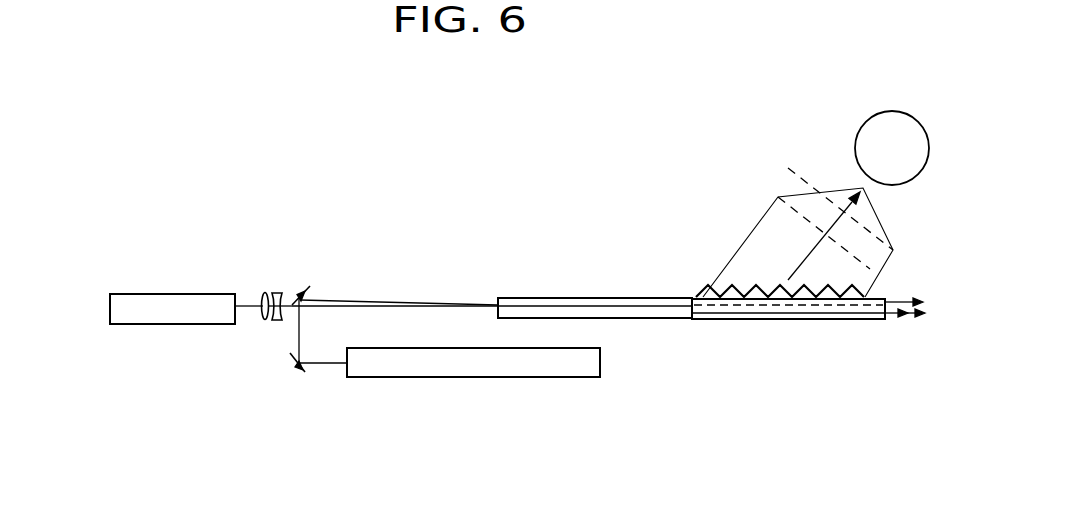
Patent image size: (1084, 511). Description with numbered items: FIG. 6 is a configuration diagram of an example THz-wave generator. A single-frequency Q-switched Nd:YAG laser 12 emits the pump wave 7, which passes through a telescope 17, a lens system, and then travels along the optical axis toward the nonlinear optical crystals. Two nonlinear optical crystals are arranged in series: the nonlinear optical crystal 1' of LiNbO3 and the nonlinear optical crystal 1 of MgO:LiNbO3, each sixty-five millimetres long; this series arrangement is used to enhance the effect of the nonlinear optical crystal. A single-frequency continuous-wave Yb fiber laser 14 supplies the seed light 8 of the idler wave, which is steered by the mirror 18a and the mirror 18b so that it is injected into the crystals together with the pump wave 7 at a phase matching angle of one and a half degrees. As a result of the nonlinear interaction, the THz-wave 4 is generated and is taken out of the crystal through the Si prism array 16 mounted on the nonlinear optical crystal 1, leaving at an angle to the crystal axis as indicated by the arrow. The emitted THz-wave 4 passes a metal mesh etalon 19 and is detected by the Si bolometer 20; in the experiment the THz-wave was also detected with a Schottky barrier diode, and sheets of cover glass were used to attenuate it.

The nonlinear optical crystal 1 is at (808, 344).
The nonlinear optical crystal 1' is at (595, 274).
The THz-wave 4 is at (805, 257).
The pump wave 7 is at (253, 307).
The seed light 8 is at (345, 298).
The Nd:YAG laser 12 is at (155, 303).
The Yb fiber laser 14 is at (460, 363).
The Si prism array 16 is at (707, 297).
The telescope 17 is at (267, 279).
The mirror 18a is at (300, 370).
The mirror 18b is at (303, 287).
The metal mesh etalon 19 is at (778, 197).
The bolometer 20 is at (883, 128).